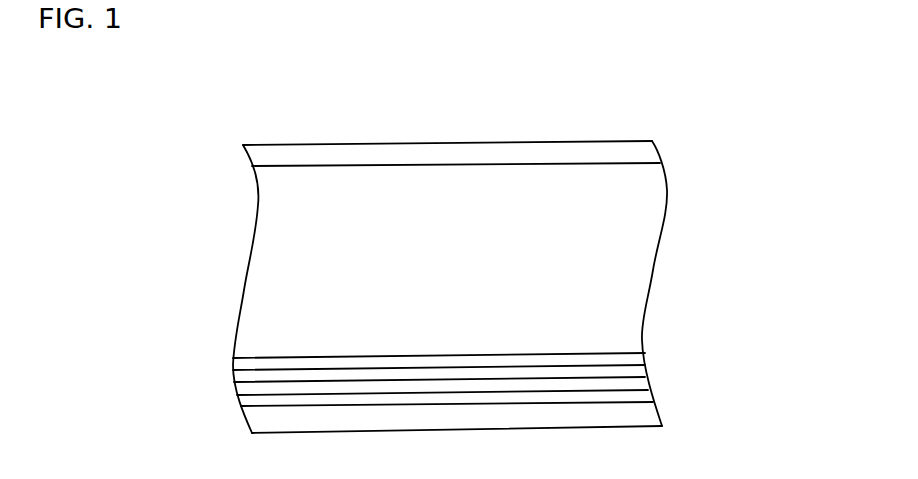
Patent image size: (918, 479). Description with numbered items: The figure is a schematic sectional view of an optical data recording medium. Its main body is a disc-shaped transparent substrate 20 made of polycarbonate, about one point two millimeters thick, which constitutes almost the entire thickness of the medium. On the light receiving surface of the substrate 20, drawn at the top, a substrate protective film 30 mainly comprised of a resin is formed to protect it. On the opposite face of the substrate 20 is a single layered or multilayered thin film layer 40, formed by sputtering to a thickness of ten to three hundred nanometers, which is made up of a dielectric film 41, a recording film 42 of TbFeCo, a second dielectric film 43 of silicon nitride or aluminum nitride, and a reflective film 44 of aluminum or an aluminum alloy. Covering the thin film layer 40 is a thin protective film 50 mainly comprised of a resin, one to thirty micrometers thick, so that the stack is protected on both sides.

The substrate 20 is at (642, 267).
The substrate protective film 30 is at (650, 153).
The thin film layer 40 is at (140, 296).
The dielectric film 41 is at (233, 362).
The recording film 42 is at (233, 374).
The dielectric film 43 is at (236, 386).
The reflective film 44 is at (240, 400).
The thin protective film 50 is at (640, 423).